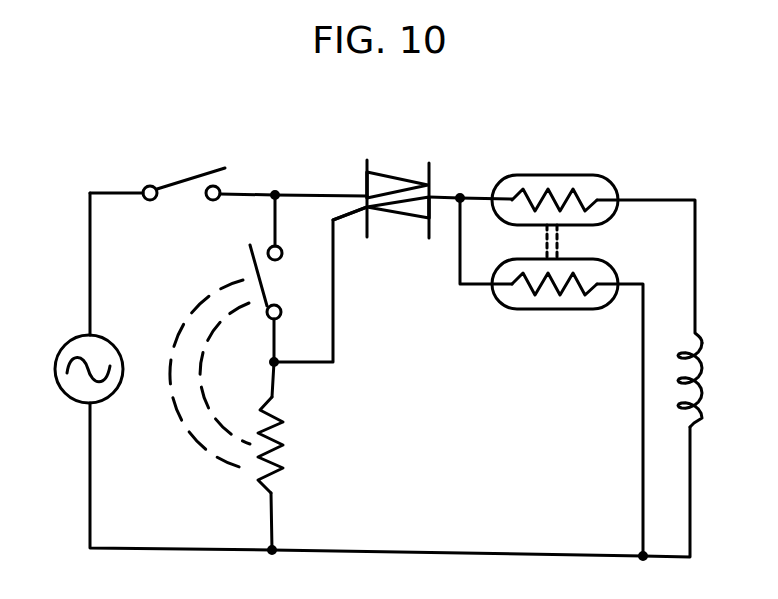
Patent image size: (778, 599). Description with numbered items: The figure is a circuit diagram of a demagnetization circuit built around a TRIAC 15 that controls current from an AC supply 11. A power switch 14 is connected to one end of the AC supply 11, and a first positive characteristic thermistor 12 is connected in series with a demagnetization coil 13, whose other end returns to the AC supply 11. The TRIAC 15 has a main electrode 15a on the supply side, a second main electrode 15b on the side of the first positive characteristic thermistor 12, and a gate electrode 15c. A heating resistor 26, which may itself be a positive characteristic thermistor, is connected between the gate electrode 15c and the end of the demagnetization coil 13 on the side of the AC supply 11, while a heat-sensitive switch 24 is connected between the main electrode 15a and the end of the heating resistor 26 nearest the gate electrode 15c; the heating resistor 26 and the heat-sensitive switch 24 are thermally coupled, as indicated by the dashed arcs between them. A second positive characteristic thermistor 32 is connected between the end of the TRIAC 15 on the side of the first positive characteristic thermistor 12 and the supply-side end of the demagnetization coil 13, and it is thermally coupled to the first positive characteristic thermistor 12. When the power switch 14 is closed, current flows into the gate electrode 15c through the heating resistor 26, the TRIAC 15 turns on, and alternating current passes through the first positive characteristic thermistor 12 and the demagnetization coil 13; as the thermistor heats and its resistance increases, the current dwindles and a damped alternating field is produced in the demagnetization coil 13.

The AC supply 11 is at (63, 348).
The first positive characteristic thermistor 12 is at (582, 176).
The demagnetization coil 13 is at (703, 392).
The power switch 14 is at (174, 180).
The TRIAC 15 is at (390, 201).
The main electrode 15a is at (363, 193).
The second main electrode of triac 15b is at (432, 197).
The gate electrode 15c is at (366, 208).
The heat-sensitive switch 24 is at (250, 270).
The heating resistor 26 is at (284, 461).
The second positive characteristic thermistor 32 is at (578, 312).